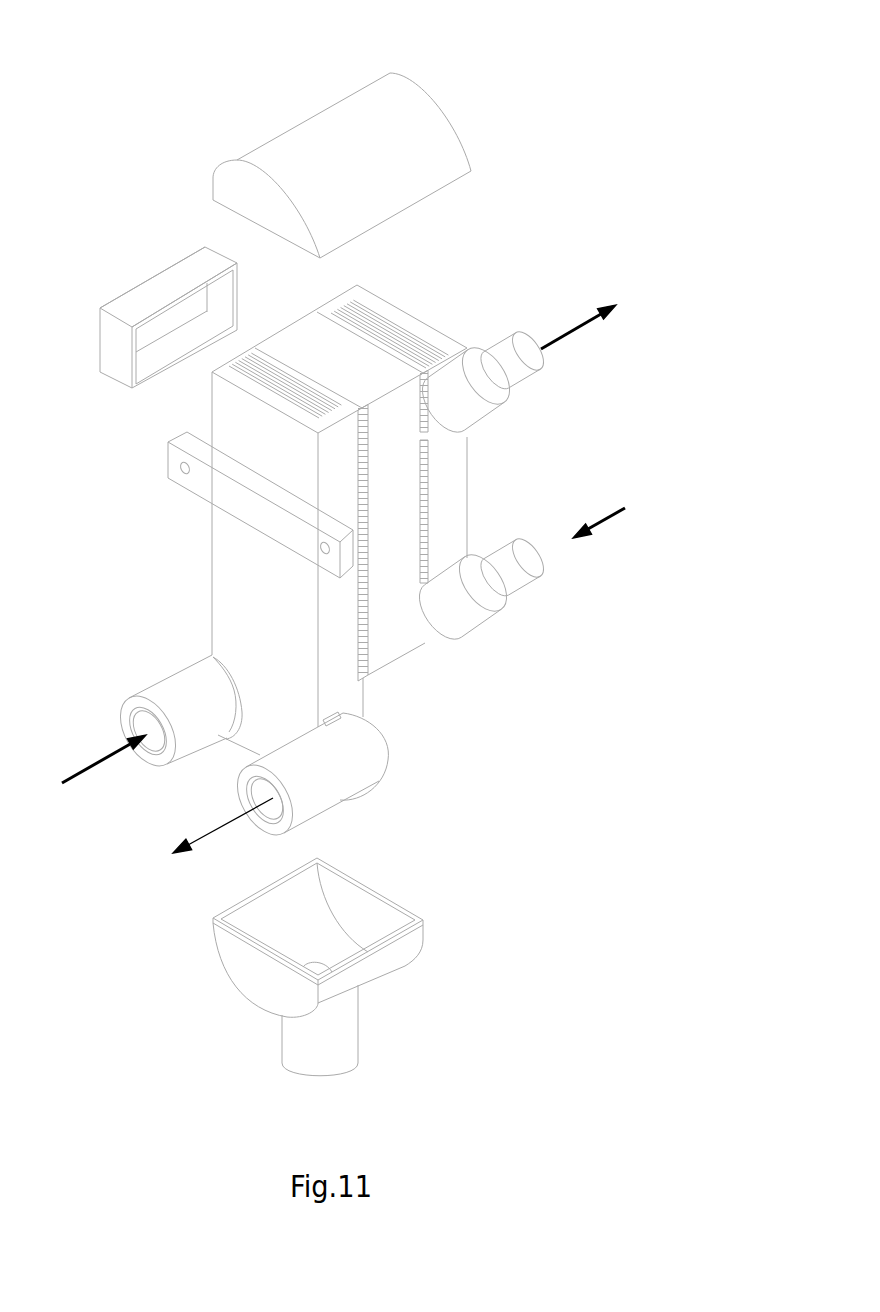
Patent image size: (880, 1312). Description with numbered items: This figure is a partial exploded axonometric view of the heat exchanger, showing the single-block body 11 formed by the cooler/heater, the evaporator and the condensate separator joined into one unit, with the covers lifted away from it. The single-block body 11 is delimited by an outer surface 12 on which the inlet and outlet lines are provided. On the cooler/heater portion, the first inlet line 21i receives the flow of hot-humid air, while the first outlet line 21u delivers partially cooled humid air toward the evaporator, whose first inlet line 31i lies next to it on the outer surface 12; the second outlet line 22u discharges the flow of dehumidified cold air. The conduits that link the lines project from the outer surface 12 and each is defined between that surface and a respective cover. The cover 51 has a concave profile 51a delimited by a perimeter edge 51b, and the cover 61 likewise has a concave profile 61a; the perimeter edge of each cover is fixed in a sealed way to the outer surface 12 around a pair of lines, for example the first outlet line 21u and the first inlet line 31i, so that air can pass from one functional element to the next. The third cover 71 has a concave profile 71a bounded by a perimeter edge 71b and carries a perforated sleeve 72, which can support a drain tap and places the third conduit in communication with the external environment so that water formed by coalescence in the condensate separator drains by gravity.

The single-block body 11 is at (494, 520).
The outer surface 12 is at (272, 361).
The first inlet line 21i is at (138, 720).
The first outlet line 21u is at (267, 388).
The second outlet line 22u is at (270, 812).
The first inlet line 31i is at (427, 342).
The cover 51 is at (108, 335).
The concave profile 51a is at (161, 350).
The perimeter edge 51b is at (180, 300).
The cover 61 is at (400, 110).
The concave profile 61a is at (415, 145).
The third cover 71 is at (403, 943).
The concave profile 71a is at (376, 904).
The perimeter edge 71b is at (235, 933).
The perforated sleeve 72 is at (337, 1025).